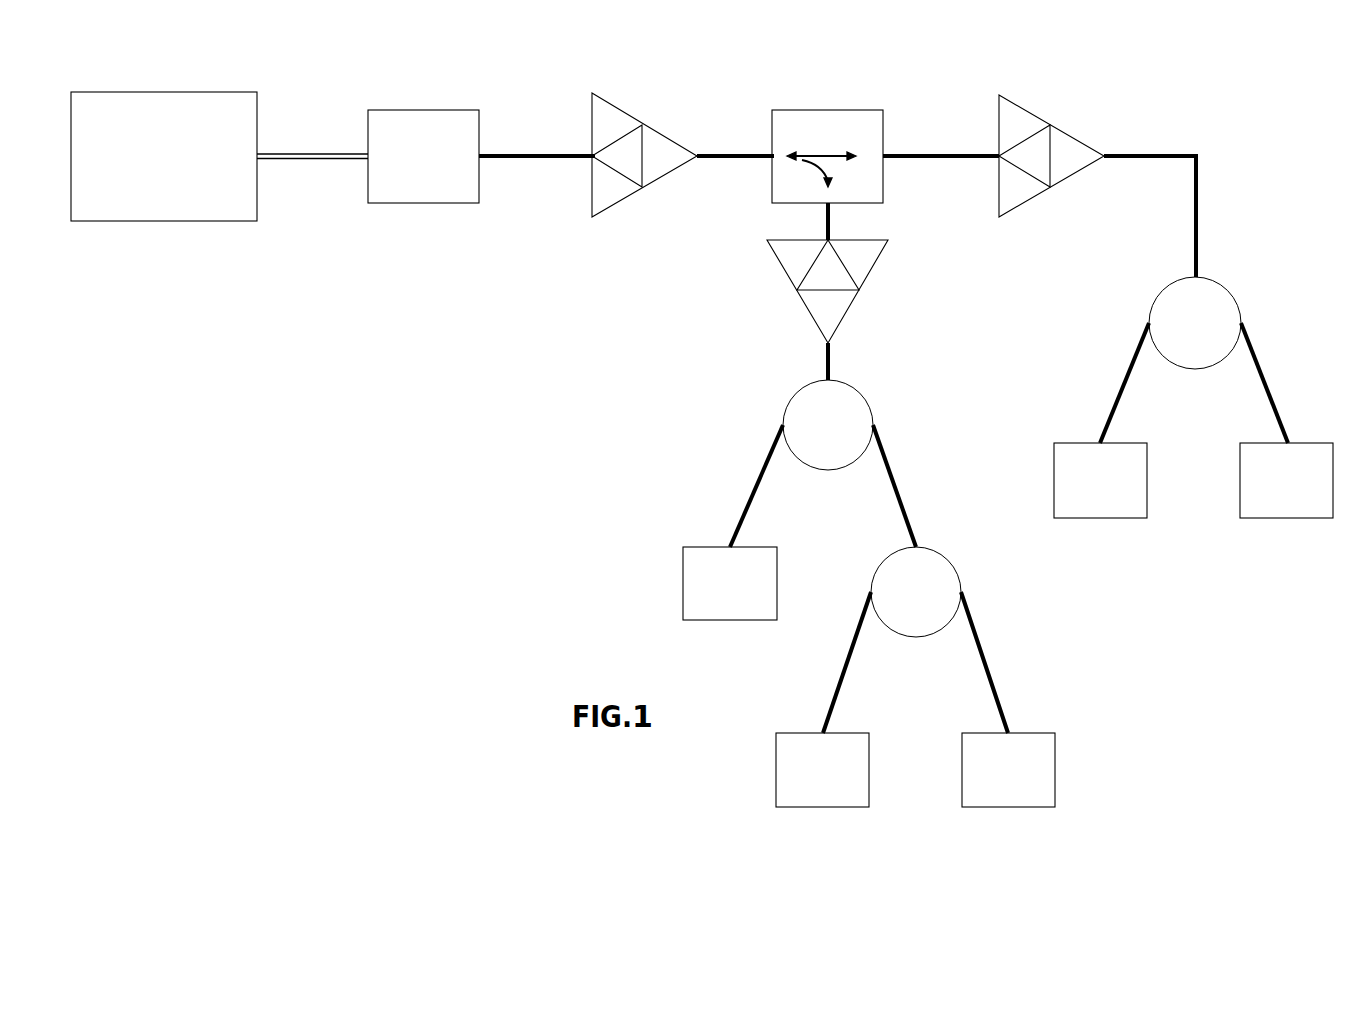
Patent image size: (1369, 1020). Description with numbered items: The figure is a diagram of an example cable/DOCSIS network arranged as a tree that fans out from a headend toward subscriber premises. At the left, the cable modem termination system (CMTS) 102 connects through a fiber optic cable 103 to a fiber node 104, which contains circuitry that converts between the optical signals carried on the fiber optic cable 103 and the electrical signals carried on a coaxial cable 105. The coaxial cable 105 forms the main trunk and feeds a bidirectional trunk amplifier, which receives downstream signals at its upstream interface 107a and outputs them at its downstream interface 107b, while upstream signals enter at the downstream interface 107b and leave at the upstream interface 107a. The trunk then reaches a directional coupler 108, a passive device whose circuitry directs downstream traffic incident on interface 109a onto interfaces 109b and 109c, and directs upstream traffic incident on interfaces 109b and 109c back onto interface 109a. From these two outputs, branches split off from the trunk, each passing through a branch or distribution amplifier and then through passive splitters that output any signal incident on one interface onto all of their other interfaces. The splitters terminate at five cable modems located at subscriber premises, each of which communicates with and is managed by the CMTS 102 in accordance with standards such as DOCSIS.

The cable modem termination system (CMTS) 102 is at (163, 81).
The fiber optic cable 103 is at (312, 160).
The fiber node 104 is at (424, 110).
The coaxial cable 105 is at (534, 159).
The upstream interface 107a is at (592, 156).
The downstream interface 107b is at (698, 155).
The directional coupler 108 is at (862, 100).
The interface 109a is at (772, 158).
The interface 109b is at (885, 155).
The interface 109c is at (826, 205).